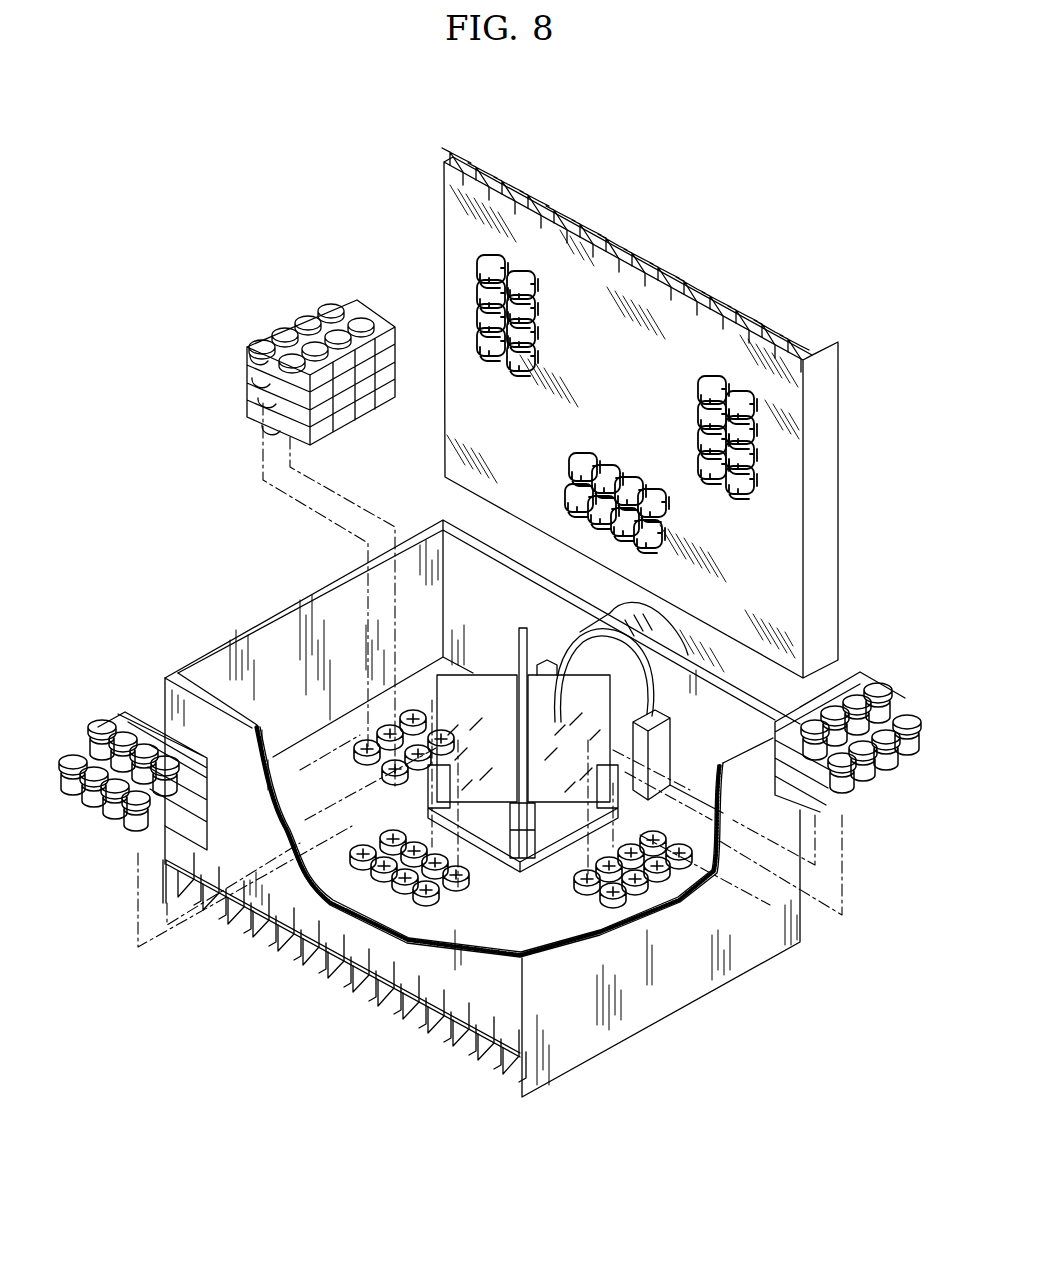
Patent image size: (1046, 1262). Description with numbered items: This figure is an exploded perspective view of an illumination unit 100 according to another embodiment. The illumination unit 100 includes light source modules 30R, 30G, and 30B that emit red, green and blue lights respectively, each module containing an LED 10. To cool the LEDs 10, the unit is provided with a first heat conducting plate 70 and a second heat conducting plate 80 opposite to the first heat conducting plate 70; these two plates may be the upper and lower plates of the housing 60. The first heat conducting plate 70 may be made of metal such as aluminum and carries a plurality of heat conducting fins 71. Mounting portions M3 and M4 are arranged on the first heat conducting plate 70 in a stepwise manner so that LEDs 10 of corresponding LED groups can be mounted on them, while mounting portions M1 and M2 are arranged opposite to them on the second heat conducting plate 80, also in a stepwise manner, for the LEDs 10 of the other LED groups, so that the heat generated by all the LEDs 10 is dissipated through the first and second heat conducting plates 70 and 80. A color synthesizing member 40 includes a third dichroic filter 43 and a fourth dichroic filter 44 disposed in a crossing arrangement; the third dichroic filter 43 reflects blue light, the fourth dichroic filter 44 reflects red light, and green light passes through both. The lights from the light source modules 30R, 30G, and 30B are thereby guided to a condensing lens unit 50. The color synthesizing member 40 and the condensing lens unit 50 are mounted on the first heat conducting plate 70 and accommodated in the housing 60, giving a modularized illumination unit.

The illumination unit 100 is at (185, 198).
The LED 10 is at (256, 358).
The light source module 30B is at (294, 337).
The light source module 30G is at (104, 699).
The light source module 30R is at (877, 661).
The color synthesizing member 40 is at (523, 710).
The third dichroic filter 43 is at (500, 675).
The fourth dichroic filter 44 is at (521, 628).
The condensing lens unit 50 is at (616, 620).
The housing 60 is at (276, 604).
The first heat conducting plate 70 is at (370, 997).
The heat conducting fins 71 is at (695, 272).
The second heat conducting plate 80 is at (641, 236).
The mounting portion M1 is at (502, 262).
The mounting portion M2 is at (530, 282).
The mounting portion M3 is at (366, 752).
The mounting portion M4 is at (382, 772).